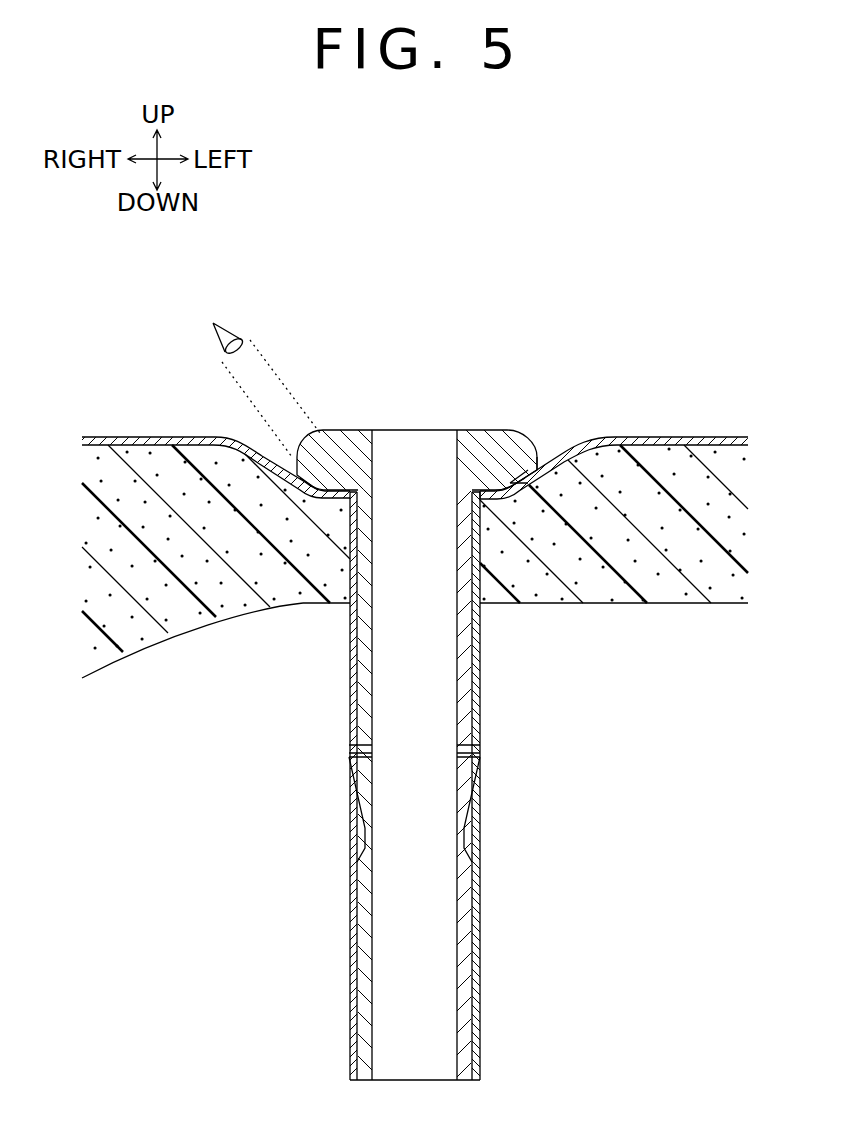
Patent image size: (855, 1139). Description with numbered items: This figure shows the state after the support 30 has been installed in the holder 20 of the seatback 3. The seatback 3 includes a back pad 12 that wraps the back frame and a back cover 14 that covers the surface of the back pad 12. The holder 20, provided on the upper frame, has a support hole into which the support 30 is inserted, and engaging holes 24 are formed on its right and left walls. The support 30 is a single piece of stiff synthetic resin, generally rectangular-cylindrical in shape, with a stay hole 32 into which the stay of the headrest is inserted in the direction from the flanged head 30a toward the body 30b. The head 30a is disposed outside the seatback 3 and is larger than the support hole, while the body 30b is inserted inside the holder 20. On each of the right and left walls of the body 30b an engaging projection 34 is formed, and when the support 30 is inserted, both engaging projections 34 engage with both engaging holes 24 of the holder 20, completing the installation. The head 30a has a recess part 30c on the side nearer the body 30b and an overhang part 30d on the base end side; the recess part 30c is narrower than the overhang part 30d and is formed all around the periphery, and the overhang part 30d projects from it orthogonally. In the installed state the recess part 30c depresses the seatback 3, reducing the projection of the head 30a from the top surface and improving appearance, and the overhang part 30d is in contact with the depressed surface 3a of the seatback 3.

The seatback 3 is at (417, 517).
The depressed surface 3a is at (320, 465).
The back pad 12 is at (725, 465).
The back cover 14 is at (690, 442).
The holder 20 is at (415, 786).
The engaging hole 24 is at (355, 800).
The support 30 is at (437, 697).
The head 30a is at (437, 402).
The body 30b is at (463, 671).
The recess part 30c is at (532, 455).
The overhang part 30d is at (512, 452).
The stay hole 32 is at (424, 428).
The engaging projection 34 is at (360, 768).